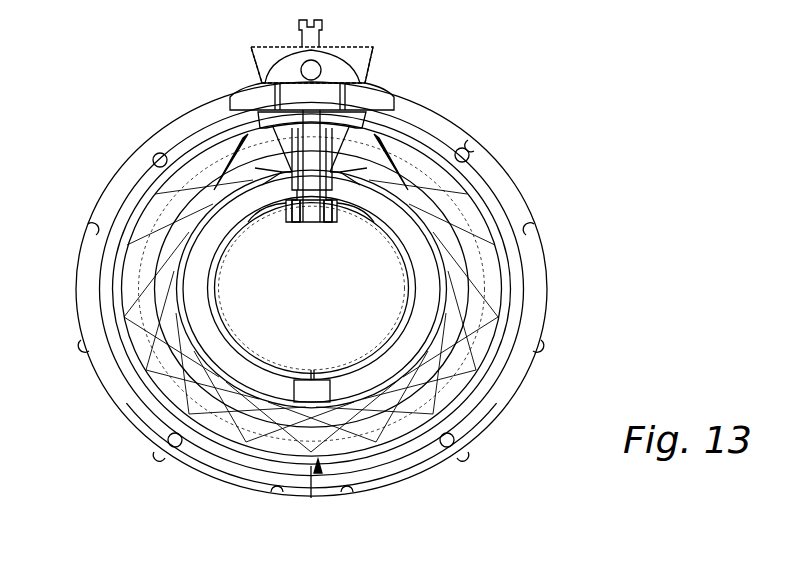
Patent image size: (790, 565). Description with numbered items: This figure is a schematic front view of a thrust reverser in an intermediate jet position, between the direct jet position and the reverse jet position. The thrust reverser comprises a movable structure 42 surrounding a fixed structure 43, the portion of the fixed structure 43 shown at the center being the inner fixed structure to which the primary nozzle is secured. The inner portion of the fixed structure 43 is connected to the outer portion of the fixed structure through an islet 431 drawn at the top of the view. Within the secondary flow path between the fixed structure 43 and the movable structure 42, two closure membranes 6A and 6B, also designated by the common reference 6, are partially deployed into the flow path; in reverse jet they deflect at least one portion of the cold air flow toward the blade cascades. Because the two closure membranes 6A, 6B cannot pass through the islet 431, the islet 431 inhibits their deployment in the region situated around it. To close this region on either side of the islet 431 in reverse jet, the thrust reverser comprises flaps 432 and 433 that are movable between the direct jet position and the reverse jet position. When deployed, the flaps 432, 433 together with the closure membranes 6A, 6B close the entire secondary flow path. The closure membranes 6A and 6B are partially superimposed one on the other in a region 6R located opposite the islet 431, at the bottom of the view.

The movable structure 42 is at (508, 182).
The fixed structure 43 is at (232, 372).
The islet 431 is at (316, 208).
The flap 432 is at (250, 158).
The flap 433 is at (400, 158).
The closure membranes 6 is at (373, 316).
The closure membrane 6A is at (172, 396).
The closure membrane 6B is at (468, 378).
The region 6R is at (321, 472).